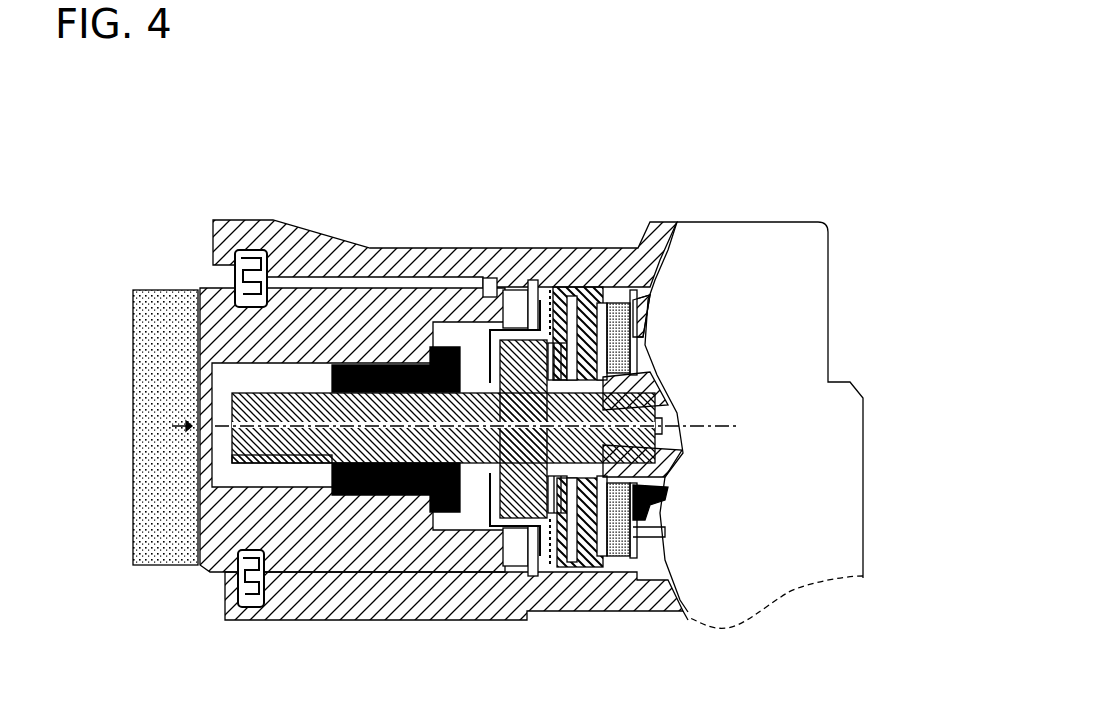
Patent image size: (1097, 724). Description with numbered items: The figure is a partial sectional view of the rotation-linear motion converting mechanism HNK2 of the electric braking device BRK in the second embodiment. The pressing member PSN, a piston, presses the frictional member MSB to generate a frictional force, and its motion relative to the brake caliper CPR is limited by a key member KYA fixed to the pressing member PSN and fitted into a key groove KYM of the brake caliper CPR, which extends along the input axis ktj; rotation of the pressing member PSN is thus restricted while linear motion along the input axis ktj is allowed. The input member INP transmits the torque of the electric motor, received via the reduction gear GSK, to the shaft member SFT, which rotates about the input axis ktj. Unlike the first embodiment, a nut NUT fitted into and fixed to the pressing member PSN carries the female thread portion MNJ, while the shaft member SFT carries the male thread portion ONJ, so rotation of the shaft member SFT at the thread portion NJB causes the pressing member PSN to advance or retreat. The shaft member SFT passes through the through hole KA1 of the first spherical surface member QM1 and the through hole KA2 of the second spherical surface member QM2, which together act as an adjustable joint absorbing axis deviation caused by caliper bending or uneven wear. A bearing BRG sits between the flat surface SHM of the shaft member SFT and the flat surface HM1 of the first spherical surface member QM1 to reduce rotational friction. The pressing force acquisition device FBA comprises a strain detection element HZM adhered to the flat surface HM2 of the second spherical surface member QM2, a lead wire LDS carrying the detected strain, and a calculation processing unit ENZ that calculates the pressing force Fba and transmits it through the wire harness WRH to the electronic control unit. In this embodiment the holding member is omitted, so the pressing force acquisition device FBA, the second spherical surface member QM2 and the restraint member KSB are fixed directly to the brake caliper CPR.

The electric braking device BRK is at (422, 130).
The rotation-linear motion converting mechanism HNK2 is at (503, 150).
The brake caliper CPR is at (300, 240).
The reduction gear GSK is at (762, 258).
The frictional member MSB is at (178, 325).
The pressing member PSN is at (205, 298).
The shaft member SFT is at (302, 415).
The pressing force Fba is at (176, 423).
The nut NUT is at (392, 500).
The male thread portion ONJ is at (287, 460).
The female thread portion MNJ is at (357, 497).
The thread portion NJB is at (358, 655).
The key member KYA is at (491, 285).
The key groove KYM is at (518, 290).
The restraint member KSB is at (556, 292).
The flat surface HM1 is at (562, 295).
The flat surface HM2 is at (648, 305).
The flat surface SHM is at (523, 523).
The bearing BRG is at (567, 497).
The strain detection element HZM is at (590, 577).
The first spherical surface member QM1 is at (578, 292).
The second spherical surface member QM2 is at (610, 292).
The lead wire LDS is at (640, 560).
The through hole KA1 is at (640, 322).
The through hole KA2 is at (640, 350).
The input member INP is at (660, 396).
The calculation processing unit ENZ is at (661, 528).
The wire harness WRH is at (665, 500).
The pressing force acquisition device FBA is at (585, 647).
The input axis ktj is at (698, 424).